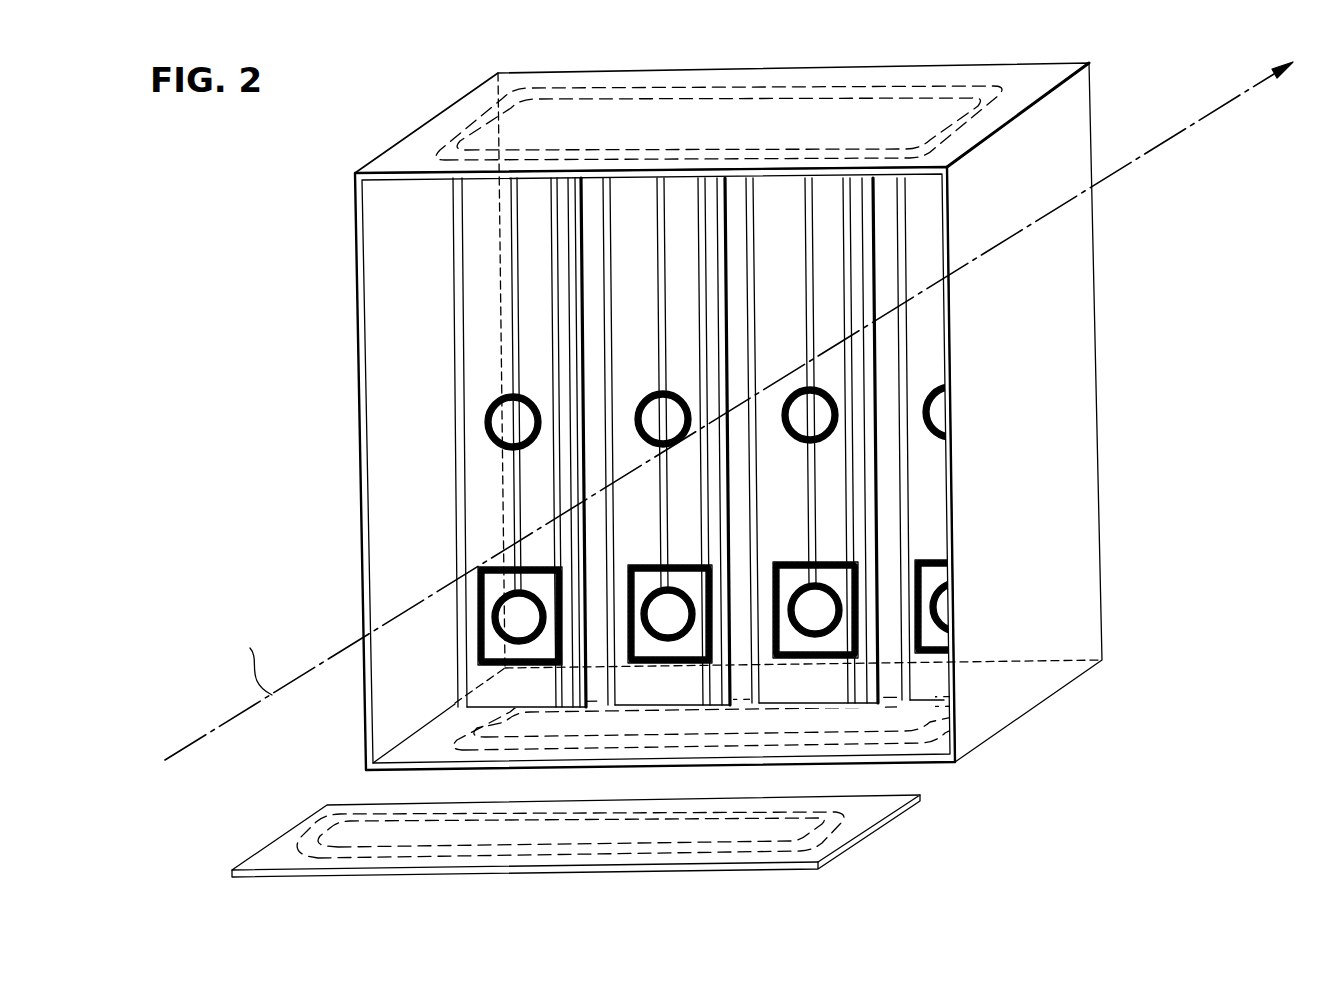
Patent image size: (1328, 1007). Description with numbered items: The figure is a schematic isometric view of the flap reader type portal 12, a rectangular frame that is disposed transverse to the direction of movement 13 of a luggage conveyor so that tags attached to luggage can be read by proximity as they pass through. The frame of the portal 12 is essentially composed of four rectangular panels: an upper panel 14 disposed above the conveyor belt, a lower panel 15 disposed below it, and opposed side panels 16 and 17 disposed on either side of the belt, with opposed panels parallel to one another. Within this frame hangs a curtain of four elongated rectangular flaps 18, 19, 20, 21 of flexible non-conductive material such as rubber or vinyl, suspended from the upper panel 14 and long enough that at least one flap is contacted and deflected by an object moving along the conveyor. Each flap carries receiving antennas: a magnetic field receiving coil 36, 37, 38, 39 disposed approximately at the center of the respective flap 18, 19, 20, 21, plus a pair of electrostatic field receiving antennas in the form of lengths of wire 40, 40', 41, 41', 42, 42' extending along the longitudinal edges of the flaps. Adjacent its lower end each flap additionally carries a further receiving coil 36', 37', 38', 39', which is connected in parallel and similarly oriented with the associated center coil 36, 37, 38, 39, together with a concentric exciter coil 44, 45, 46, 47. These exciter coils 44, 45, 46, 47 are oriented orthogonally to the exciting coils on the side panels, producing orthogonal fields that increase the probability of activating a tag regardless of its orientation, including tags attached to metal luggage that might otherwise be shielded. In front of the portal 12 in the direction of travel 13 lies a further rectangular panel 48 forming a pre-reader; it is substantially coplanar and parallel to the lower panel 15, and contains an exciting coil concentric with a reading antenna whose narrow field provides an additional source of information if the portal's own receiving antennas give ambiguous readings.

The portal type reader 12 is at (1120, 79).
The direction of movement 13 is at (1182, 133).
The upper panel 14 is at (457, 112).
The lower panel 15 is at (427, 742).
The side panel 16 is at (1075, 290).
The side panel 17 is at (392, 272).
The flap 18 is at (519, 442).
The flap 19 is at (666, 441).
The flap 20 is at (812, 440).
The flap 21 is at (948, 439).
The magnetic field receiving antenna or coil 36 is at (506, 438).
The further receiving coil 36' is at (510, 583).
The magnetic field receiving antenna or coil 37 is at (658, 449).
The further receiving coil 37' is at (660, 584).
The magnetic field receiving antenna or coil 38 is at (804, 432).
The further receiving coil 38' is at (808, 579).
The magnetic field receiving antenna or coil 39 is at (945, 430).
The further receiving coil 39' is at (947, 577).
The electrostatic field receiving antenna 40 is at (473, 442).
The electrostatic field receiving antenna 40' is at (553, 442).
The electrostatic field receiving antenna 41 is at (624, 441).
The electrostatic field receiving antenna 41' is at (699, 441).
The electrostatic field receiving antenna 42 is at (771, 440).
The electrostatic field receiving antenna 42' is at (847, 440).
The exciter coil 44 is at (541, 664).
The exciter coil 45 is at (655, 665).
The exciter coil 46 is at (799, 660).
The exciter coil 47 is at (937, 657).
The further rectangular panel 48 is at (288, 846).